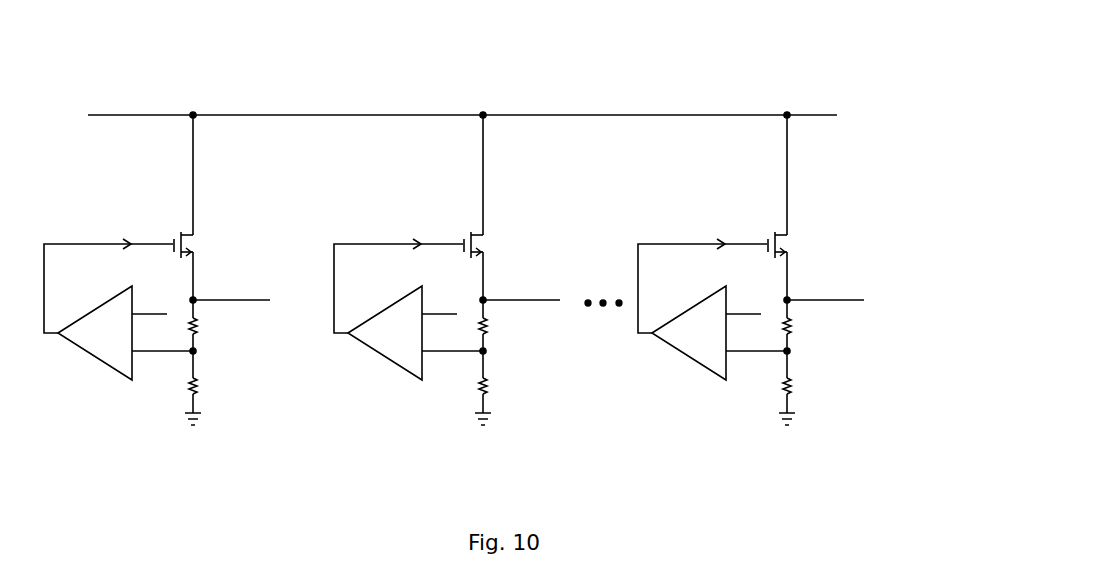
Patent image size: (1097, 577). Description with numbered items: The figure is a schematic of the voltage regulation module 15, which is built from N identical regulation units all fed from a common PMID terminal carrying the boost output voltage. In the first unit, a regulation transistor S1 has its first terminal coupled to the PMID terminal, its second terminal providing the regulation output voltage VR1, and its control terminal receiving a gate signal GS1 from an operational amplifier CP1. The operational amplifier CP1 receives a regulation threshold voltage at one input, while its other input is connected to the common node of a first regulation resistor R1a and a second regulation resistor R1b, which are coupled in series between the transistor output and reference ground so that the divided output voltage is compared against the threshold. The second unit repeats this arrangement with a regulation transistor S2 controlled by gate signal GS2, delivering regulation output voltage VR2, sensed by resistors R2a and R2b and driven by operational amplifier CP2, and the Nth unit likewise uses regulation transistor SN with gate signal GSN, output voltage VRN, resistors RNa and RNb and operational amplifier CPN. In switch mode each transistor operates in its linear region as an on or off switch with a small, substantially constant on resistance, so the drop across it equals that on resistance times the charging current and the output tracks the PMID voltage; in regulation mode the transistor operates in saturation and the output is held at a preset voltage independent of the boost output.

The voltage regulation module 15 is at (859, 55).
The PMID terminal PMID is at (462, 105).
The gate signal of the first regulation transistor GS1 is at (108, 277).
The first regulation transistor S1 is at (159, 250).
The first regulation output voltage VR1 is at (230, 291).
The first regulation resistor of the first regulation unit R1a is at (212, 327).
The second regulation resistor of the first regulation unit R1b is at (212, 385).
The first operational amplifier CP1 is at (113, 331).
The gate signal of the second regulation transistor GS2 is at (398, 277).
The second regulation transistor S2 is at (461, 250).
The second regulation output voltage VR2 is at (520, 291).
The first regulation resistor of the second regulation unit R2a is at (502, 327).
The second regulation resistor of the second regulation unit R2b is at (502, 385).
The second operational amplifier CP2 is at (403, 331).
The gate signal of the Nth regulation transistor GSN is at (702, 274).
The Nth regulation transistor SN is at (761, 251).
The Nth regulation output voltage VRN is at (824, 290).
The first regulation resistor of the Nth regulation unit RNa is at (807, 326).
The second regulation resistor of the Nth regulation unit RNb is at (807, 384).
The Nth operational amplifier CPN is at (707, 331).